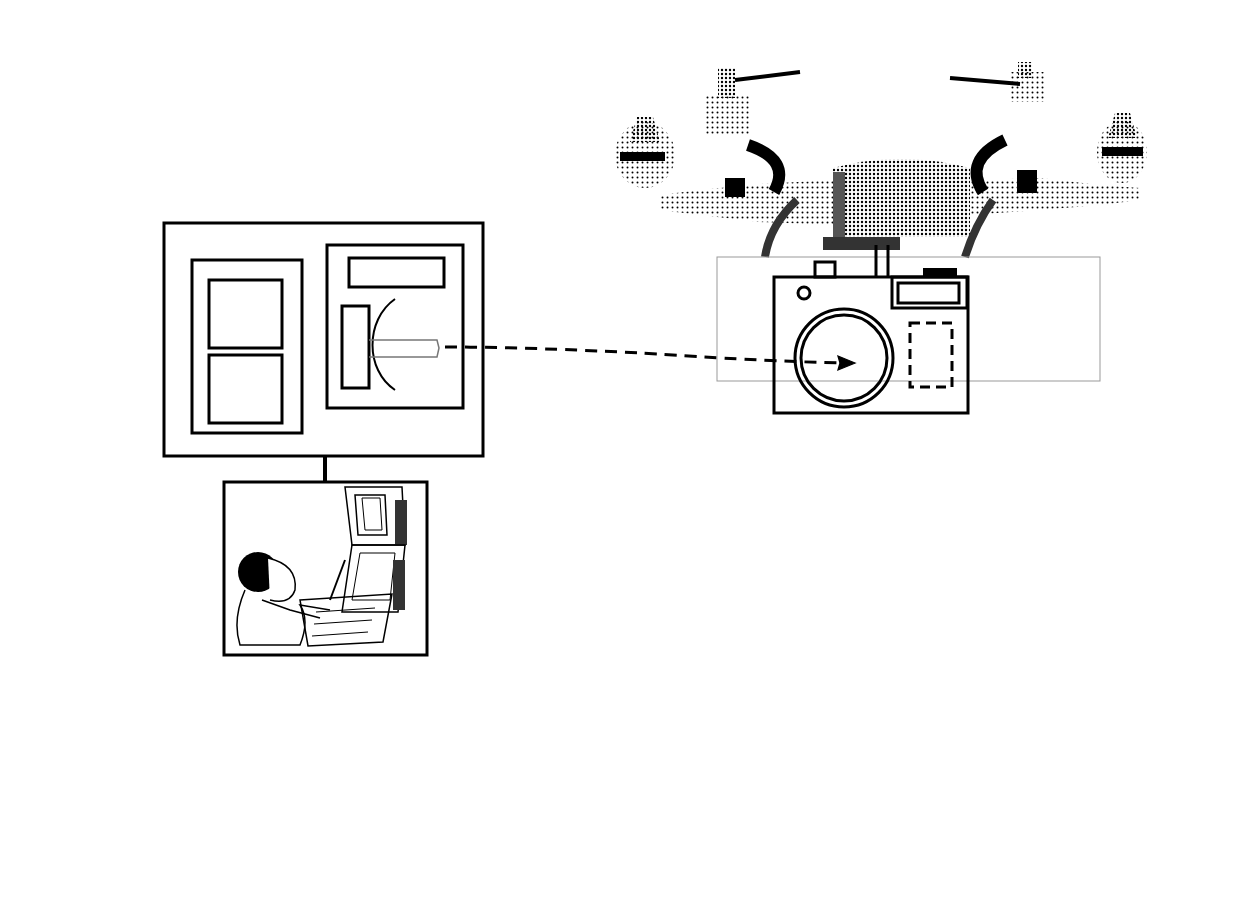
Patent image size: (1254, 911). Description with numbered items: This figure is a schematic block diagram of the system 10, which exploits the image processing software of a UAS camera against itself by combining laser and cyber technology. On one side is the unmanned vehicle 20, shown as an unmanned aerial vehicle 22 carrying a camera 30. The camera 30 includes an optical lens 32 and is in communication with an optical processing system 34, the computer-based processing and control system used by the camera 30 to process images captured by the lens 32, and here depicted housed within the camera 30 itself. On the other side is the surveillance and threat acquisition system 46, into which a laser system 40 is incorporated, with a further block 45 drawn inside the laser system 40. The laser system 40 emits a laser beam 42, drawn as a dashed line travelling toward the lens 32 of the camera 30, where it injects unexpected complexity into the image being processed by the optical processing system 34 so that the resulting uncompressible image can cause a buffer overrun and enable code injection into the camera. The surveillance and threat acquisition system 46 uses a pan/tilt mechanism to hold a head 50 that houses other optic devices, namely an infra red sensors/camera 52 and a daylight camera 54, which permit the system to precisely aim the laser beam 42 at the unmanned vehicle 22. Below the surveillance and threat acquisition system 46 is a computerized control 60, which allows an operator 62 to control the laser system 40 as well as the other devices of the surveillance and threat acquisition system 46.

The system 10 is at (460, 106).
The unmanned vehicle 20 is at (1132, 243).
The unmanned aerial vehicle 22 is at (903, 135).
The camera 30 is at (897, 402).
The optical lens 32 is at (845, 390).
The optical processing system 34 is at (938, 360).
The laser system 40 is at (430, 245).
The laser beam 42 is at (655, 360).
The antenna 45 is at (390, 272).
The surveillance and threat acquisition system 46 is at (282, 223).
The head 50 is at (192, 295).
The infra red sensors/camera 52 is at (258, 331).
The daylight camera 54 is at (258, 404).
The computerized control 60 is at (403, 560).
The operator 62 is at (247, 608).